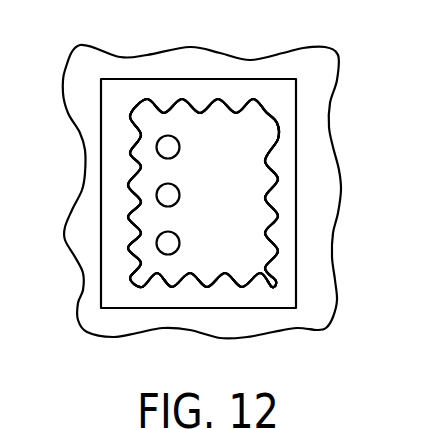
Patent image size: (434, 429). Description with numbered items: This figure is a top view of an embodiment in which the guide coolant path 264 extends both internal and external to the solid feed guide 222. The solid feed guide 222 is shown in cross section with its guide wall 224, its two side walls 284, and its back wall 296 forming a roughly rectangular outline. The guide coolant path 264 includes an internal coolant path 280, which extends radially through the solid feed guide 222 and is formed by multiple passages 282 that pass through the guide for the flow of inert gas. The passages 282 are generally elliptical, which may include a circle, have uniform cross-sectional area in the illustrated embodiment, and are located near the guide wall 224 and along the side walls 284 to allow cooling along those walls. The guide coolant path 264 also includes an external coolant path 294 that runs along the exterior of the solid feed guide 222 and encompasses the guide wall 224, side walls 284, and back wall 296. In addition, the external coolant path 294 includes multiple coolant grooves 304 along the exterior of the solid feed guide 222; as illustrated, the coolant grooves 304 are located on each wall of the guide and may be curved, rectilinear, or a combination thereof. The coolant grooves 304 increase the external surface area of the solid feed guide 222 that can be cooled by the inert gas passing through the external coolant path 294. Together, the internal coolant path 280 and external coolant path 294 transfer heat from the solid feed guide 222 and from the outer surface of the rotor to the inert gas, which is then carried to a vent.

The solid feed guide 222 is at (264, 164).
The guide wall 224 is at (129, 186).
The guide coolant path 264 is at (238, 91).
The internal coolant path 280 is at (192, 135).
The passages 282 is at (177, 187).
The side walls 284 is at (181, 99).
The external coolant path 294 is at (261, 297).
The back wall 296 is at (264, 204).
The coolant grooves 304 is at (141, 167).